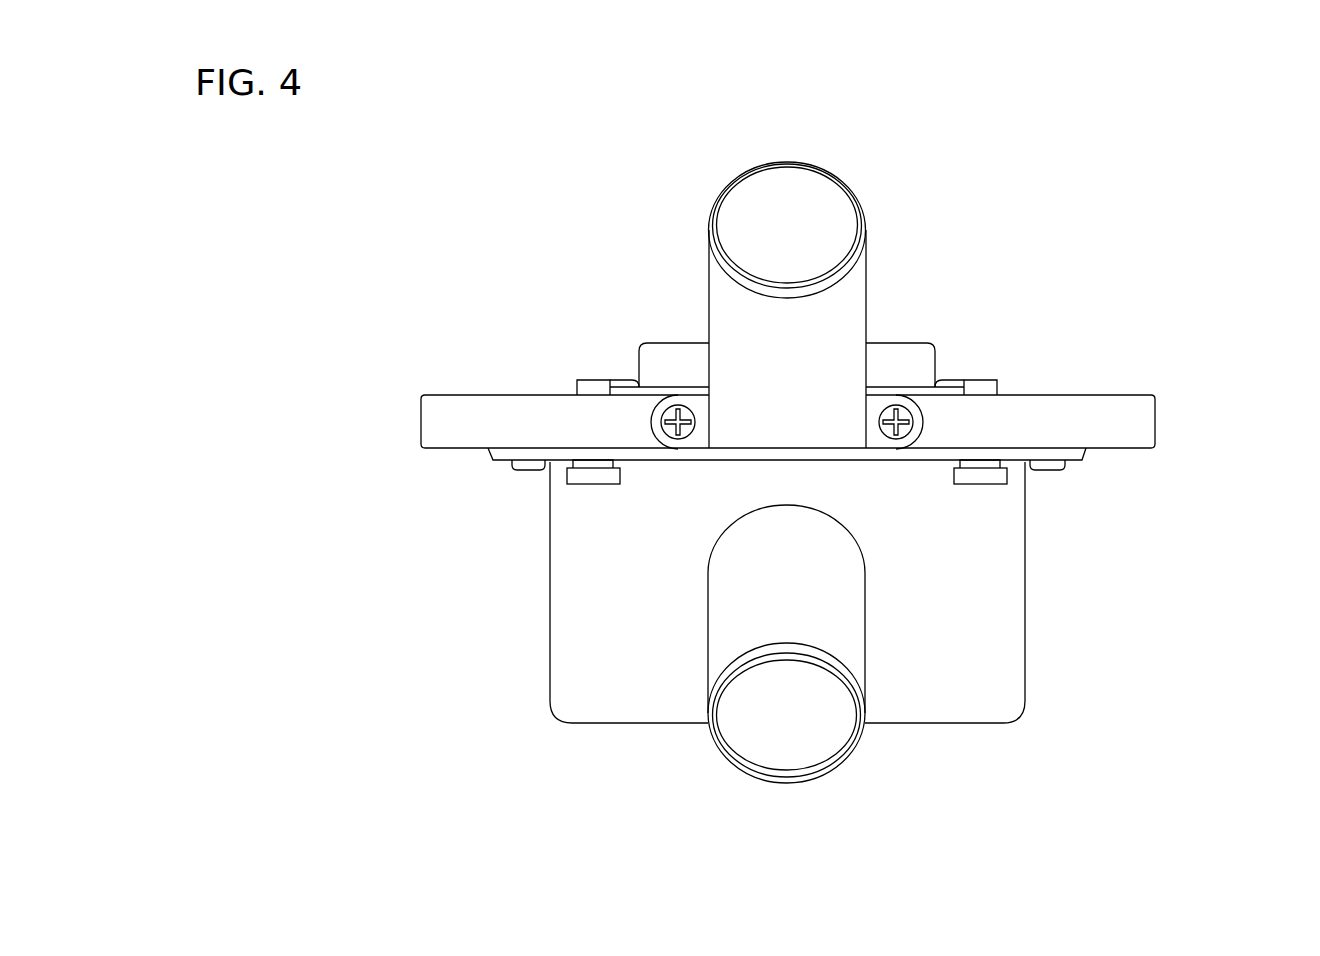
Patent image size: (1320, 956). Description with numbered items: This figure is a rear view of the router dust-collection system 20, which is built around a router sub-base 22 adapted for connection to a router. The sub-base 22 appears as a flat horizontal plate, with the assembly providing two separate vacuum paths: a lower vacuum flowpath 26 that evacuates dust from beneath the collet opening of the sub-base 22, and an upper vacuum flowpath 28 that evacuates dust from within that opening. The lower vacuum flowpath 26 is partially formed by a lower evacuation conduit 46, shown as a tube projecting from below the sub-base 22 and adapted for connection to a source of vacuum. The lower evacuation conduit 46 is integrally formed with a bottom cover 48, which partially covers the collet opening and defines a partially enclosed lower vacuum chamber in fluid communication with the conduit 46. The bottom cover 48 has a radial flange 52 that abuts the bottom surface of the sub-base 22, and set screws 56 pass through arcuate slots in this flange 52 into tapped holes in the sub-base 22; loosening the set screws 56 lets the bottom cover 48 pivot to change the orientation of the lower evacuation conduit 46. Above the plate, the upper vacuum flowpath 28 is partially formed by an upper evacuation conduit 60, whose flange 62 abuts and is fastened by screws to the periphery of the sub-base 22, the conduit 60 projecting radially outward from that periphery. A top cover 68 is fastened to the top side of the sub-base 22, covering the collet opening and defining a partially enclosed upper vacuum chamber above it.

The router dust-collection system 20 is at (980, 137).
The router sub-base 22 is at (1158, 392).
The lower vacuum flowpath 26 is at (828, 762).
The upper vacuum flowpath 28 is at (793, 180).
The lower evacuation conduit 46 is at (759, 682).
The bottom cover 48 is at (556, 720).
The radial flange 52 is at (490, 460).
The set screws 56 is at (590, 486).
The upper evacuation conduit 60 is at (840, 262).
The flange 62 is at (925, 427).
The top cover 68 is at (936, 345).